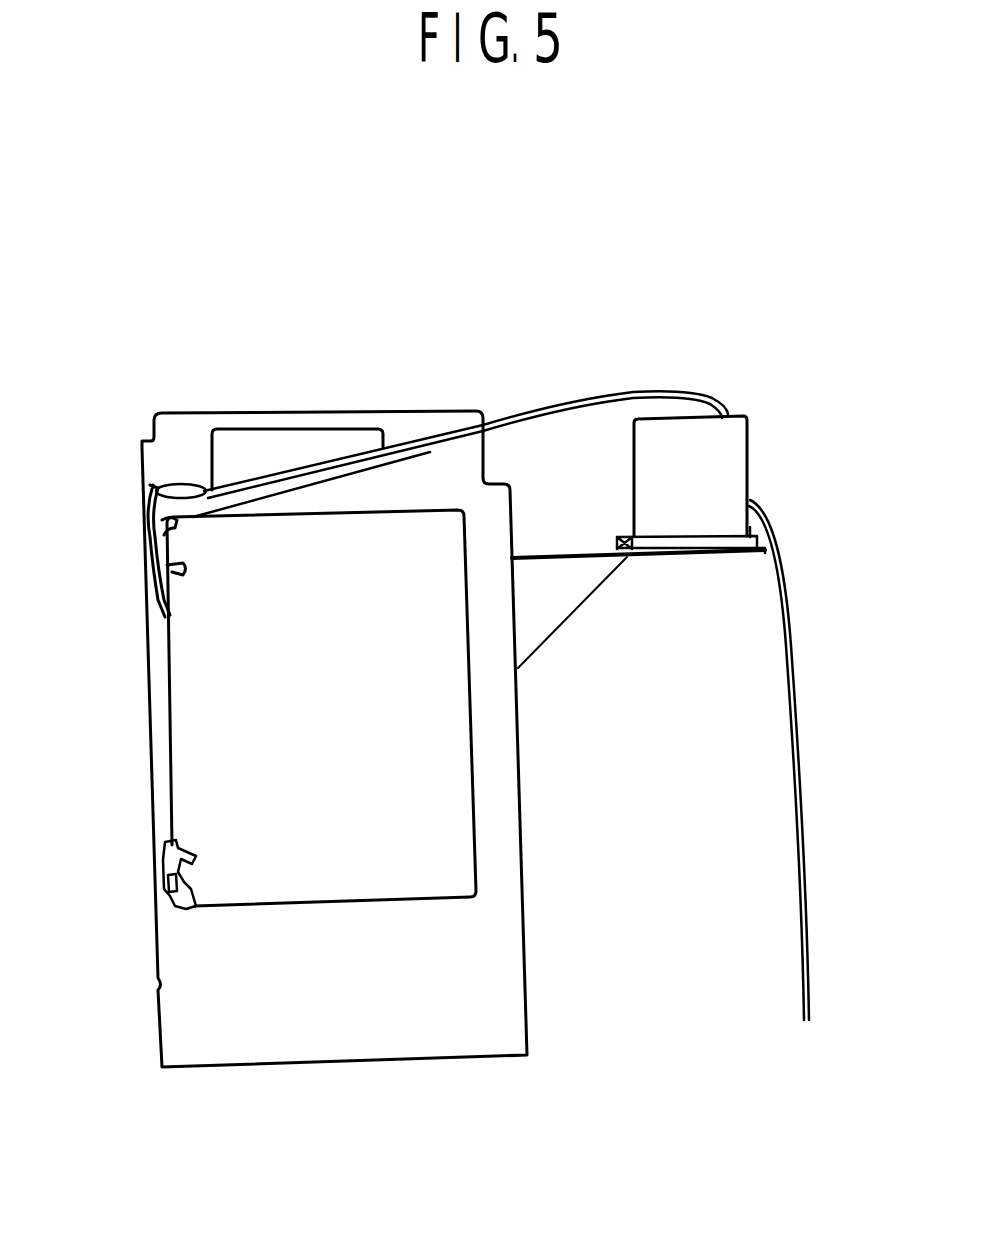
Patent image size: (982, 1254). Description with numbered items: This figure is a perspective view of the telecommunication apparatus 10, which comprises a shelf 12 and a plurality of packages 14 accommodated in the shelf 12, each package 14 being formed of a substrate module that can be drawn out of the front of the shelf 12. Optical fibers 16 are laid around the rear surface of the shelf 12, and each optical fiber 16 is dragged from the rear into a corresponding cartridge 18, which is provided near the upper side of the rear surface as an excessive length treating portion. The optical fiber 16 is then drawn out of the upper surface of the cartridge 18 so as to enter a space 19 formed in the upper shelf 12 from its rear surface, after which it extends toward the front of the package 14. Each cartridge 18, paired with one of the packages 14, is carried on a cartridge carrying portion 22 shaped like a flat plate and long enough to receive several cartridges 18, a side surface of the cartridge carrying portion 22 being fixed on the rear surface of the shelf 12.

The telecommunication apparatus 10 is at (85, 292).
The shelf 12 is at (212, 1013).
The package 14 is at (203, 710).
The optical fiber 16 is at (808, 808).
The cartridge 18 is at (733, 478).
The space 19 is at (420, 422).
The cartridge carrying portion 22 is at (682, 592).